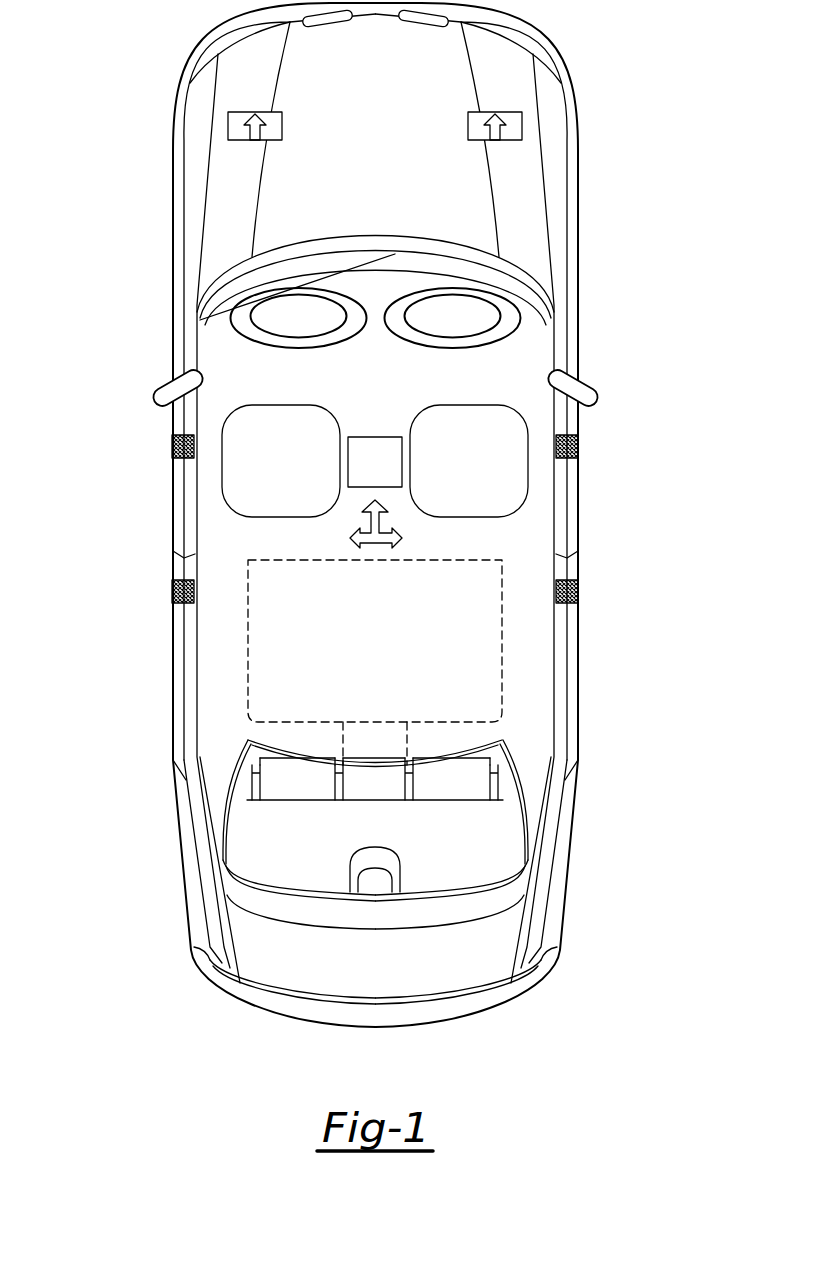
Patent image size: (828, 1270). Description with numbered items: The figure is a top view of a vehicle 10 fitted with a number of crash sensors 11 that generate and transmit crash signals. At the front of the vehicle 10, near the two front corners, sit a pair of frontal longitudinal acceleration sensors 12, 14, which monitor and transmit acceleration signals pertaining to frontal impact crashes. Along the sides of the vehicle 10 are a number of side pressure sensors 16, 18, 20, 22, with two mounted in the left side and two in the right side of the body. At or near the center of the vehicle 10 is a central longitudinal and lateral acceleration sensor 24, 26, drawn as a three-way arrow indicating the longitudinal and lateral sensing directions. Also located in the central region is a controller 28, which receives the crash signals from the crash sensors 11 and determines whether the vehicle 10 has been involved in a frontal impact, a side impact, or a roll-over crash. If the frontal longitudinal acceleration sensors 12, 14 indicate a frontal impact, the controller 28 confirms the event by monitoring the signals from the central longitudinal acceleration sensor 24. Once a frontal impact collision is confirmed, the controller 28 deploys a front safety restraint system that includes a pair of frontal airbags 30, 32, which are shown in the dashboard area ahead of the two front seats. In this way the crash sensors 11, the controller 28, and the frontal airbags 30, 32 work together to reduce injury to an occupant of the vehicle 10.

The vehicle 10 is at (580, 207).
The crash sensors 11 is at (456, 125).
The frontal longitudinal acceleration sensor 12 is at (228, 128).
The frontal longitudinal acceleration sensor 14 is at (521, 128).
The side pressure sensor 16 is at (183, 446).
The side pressure sensor 18 is at (183, 593).
The side pressure sensor 20 is at (567, 446).
The side pressure sensor 22 is at (568, 593).
The central longitudinal acceleration sensor 24 is at (421, 524).
The central lateral acceleration sensor 26 is at (386, 524).
The controller 28 is at (348, 462).
The frontal airbag 30 is at (231, 330).
The frontal airbag 32 is at (520, 330).